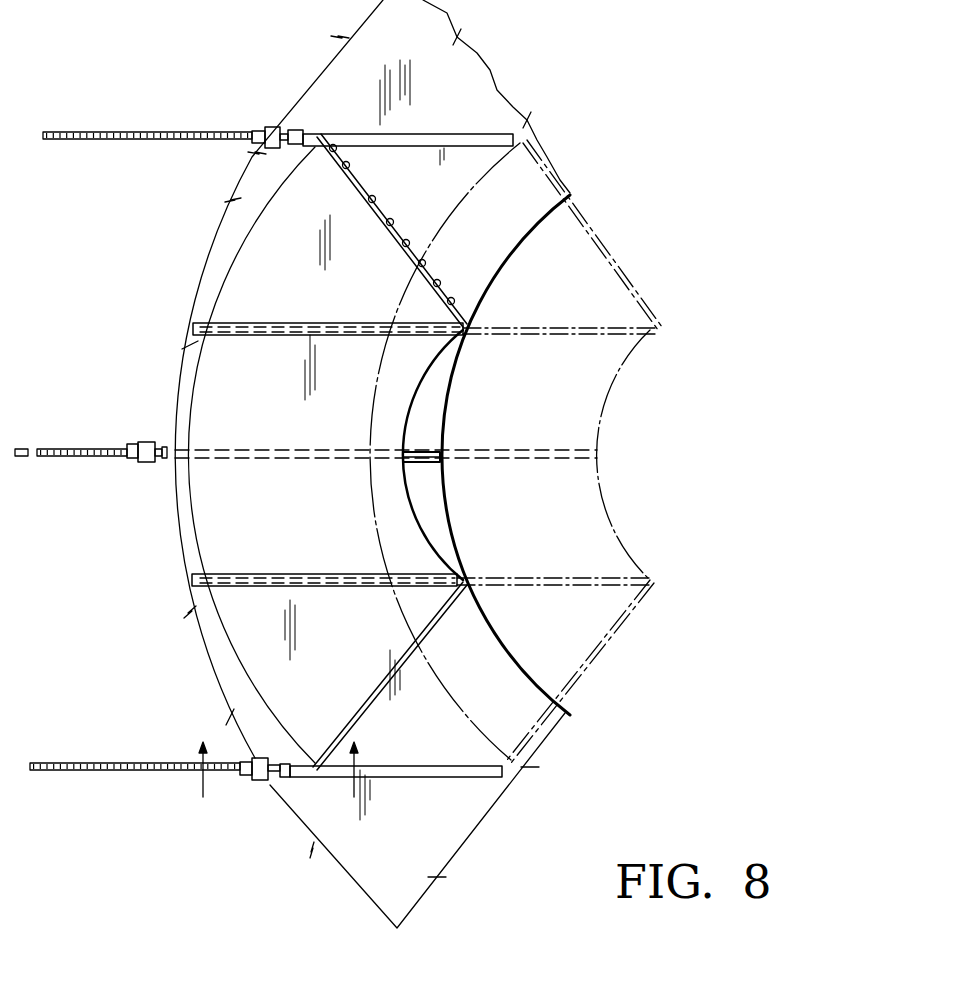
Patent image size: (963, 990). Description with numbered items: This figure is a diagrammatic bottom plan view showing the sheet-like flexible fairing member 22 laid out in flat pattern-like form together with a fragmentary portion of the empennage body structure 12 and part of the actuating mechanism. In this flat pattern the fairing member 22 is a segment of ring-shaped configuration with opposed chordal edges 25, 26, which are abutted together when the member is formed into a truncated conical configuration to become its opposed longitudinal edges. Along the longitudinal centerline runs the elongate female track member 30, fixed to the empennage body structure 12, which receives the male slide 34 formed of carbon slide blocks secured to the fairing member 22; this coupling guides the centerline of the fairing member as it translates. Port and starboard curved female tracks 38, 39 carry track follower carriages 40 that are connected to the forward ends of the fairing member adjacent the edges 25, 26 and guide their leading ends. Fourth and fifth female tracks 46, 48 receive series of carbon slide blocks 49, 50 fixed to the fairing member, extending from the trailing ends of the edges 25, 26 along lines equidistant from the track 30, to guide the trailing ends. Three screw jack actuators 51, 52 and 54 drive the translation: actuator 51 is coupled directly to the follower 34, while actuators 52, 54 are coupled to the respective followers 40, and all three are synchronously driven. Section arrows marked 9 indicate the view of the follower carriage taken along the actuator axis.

The section line of FIG. 9 is at (277, 763).
The empennage body structure 12 is at (440, 846).
The fairing member 22 is at (200, 505).
The chordal edge 25 is at (388, 212).
The chordal edge 26 is at (386, 682).
The track member 30 is at (432, 452).
The slide 34 is at (600, 457).
The port curved female track 38 is at (445, 134).
The starboard curved female track 39 is at (425, 778).
The track follower carriage 40 is at (300, 130).
The fourth female track 46 is at (300, 323).
The fifth female track 48 is at (296, 575).
The carbon slide blocks 49 is at (350, 325).
The carbon slide blocks 50 is at (345, 575).
The screw jack actuator 51 is at (143, 440).
The screw jack actuator 52 is at (272, 128).
The screw jack actuator 54 is at (262, 782).